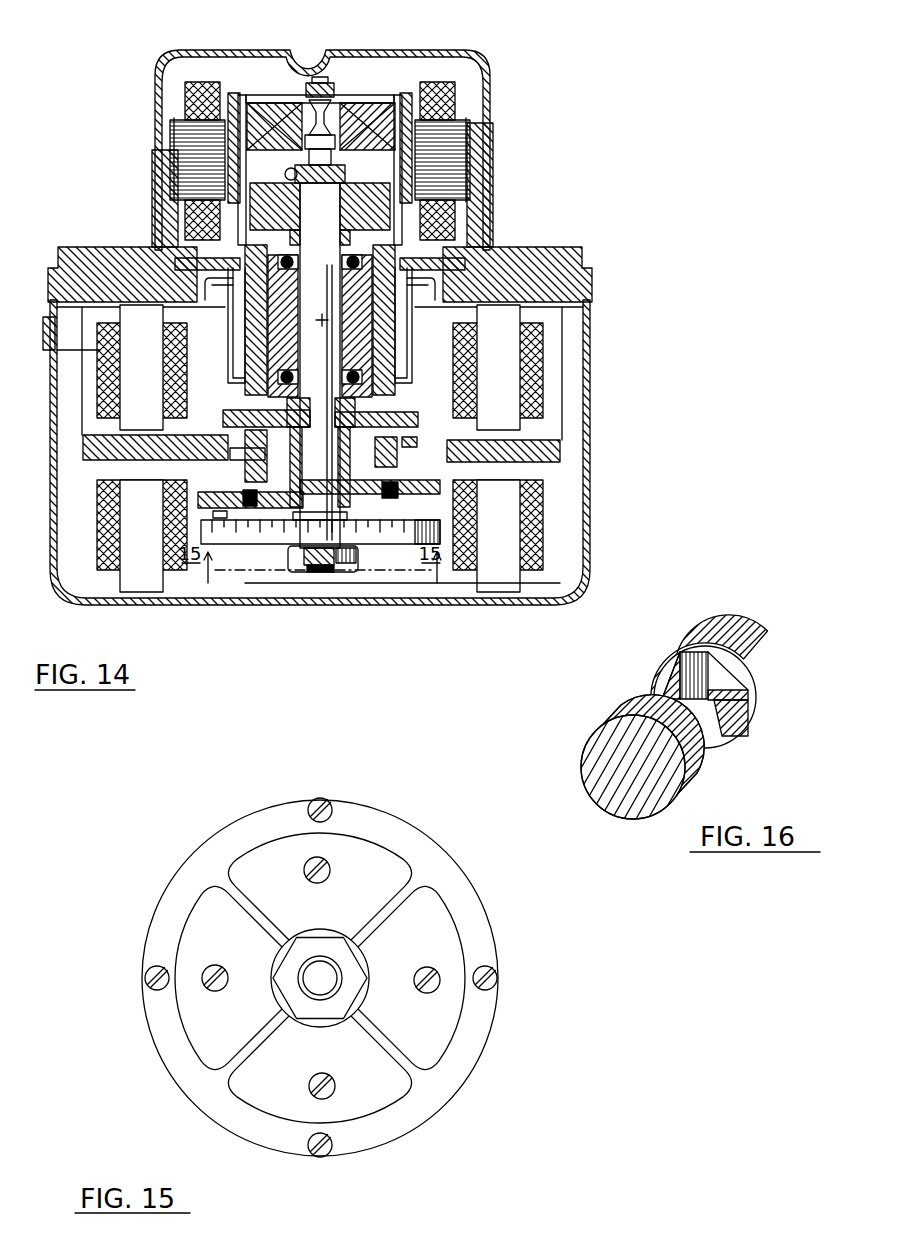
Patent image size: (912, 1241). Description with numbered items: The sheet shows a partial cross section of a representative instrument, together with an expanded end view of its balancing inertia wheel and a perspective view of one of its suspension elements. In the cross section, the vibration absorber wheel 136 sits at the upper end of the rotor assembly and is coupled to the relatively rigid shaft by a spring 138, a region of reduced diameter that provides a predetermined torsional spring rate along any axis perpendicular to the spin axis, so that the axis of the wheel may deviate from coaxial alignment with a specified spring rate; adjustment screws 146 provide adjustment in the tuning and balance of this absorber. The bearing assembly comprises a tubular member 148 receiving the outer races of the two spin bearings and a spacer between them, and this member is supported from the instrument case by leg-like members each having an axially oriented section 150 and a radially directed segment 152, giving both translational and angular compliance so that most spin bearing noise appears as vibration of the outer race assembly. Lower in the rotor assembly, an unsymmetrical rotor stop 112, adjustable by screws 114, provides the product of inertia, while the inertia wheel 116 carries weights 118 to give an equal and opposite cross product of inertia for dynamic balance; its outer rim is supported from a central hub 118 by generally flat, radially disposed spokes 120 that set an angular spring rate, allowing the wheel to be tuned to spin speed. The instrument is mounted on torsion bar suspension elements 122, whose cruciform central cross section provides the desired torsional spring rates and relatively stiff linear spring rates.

In FIG. 14, the unsymmetrical rotor stop 112 is at (440, 503).
In FIG. 15, the unsymmetrical rotor stop 112 is at (441, 940).
In FIG. 14, the screws 114 is at (242, 508).
In FIG. 15, the screws 114 is at (338, 870).
In FIG. 14, the inertia wheel 116 is at (373, 537).
In FIG. 15, the inertia wheel 116 is at (417, 835).
In FIG. 14, the weights / central hub 118 is at (222, 522).
In FIG. 15, the weights / central hub 118 is at (316, 797).
In FIG. 15, the spokes 120 is at (258, 910).
In FIG. 16, the torsion bar suspension elements 122 is at (718, 618).
In FIG. 14, the vibration absorber wheel 136 is at (407, 97).
In FIG. 14, the spring 138 is at (350, 108).
In FIG. 14, the adjustment screws 146 is at (270, 104).
In FIG. 14, the tubular member 148 is at (258, 372).
In FIG. 14, the axially oriented section 150 is at (240, 330).
In FIG. 14, the radially directed segment 152 is at (232, 280).